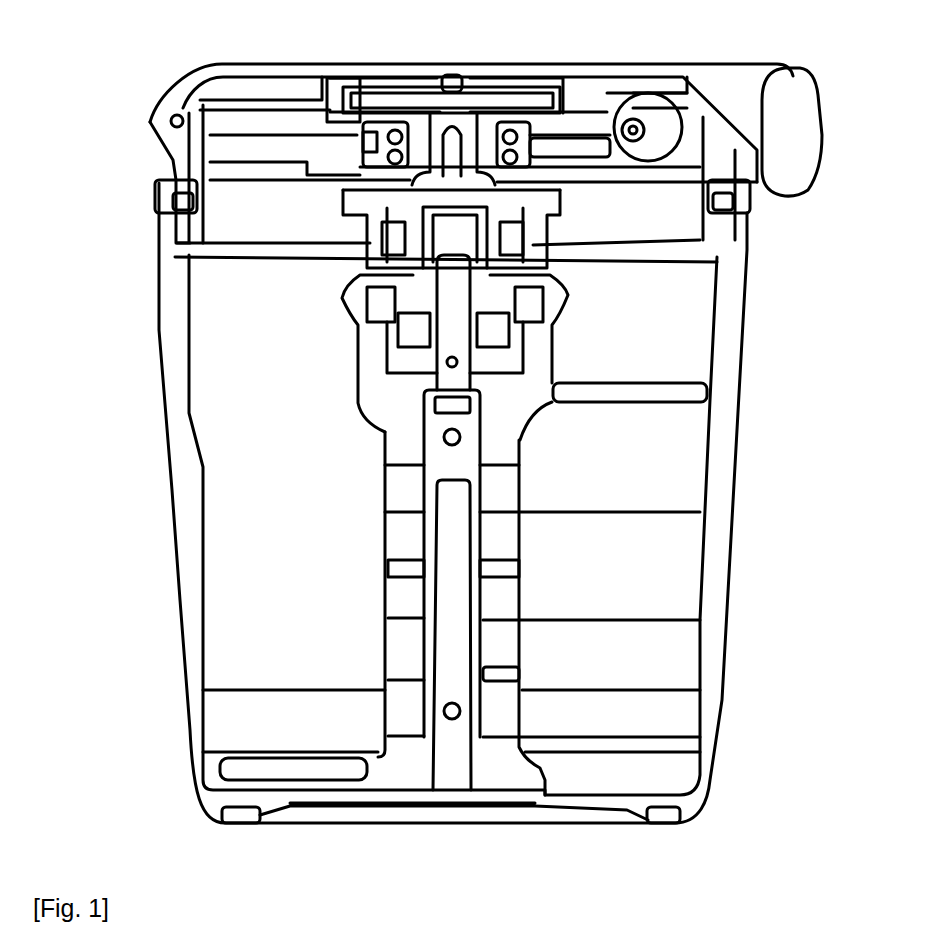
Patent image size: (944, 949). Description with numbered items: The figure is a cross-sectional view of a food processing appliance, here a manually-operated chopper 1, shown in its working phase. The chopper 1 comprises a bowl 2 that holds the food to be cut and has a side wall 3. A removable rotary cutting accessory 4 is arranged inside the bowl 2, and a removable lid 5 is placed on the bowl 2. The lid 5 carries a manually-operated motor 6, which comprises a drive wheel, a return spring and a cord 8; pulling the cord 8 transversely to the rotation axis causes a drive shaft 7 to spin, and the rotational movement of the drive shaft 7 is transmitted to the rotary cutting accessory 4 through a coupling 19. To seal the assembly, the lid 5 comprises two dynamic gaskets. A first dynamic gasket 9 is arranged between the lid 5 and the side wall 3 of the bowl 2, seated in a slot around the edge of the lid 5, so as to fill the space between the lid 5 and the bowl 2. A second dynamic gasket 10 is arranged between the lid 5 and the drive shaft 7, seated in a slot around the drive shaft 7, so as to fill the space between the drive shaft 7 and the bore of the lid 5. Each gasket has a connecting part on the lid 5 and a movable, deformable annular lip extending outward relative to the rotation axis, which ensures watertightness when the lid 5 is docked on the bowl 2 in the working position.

The manually-operated chopper 1 is at (132, 68).
The bowl 2 is at (848, 268).
The side wall 3 is at (185, 355).
The removable rotary cutting accessory 4 is at (403, 645).
The removable lid 5 is at (848, 62).
The manually-operated motor 6 is at (492, 128).
The drive shaft 7 is at (388, 207).
The cord 8 is at (603, 130).
The first dynamic gasket 9 is at (175, 205).
The second dynamic gasket 10 is at (388, 245).
The coupling 19 is at (352, 211).